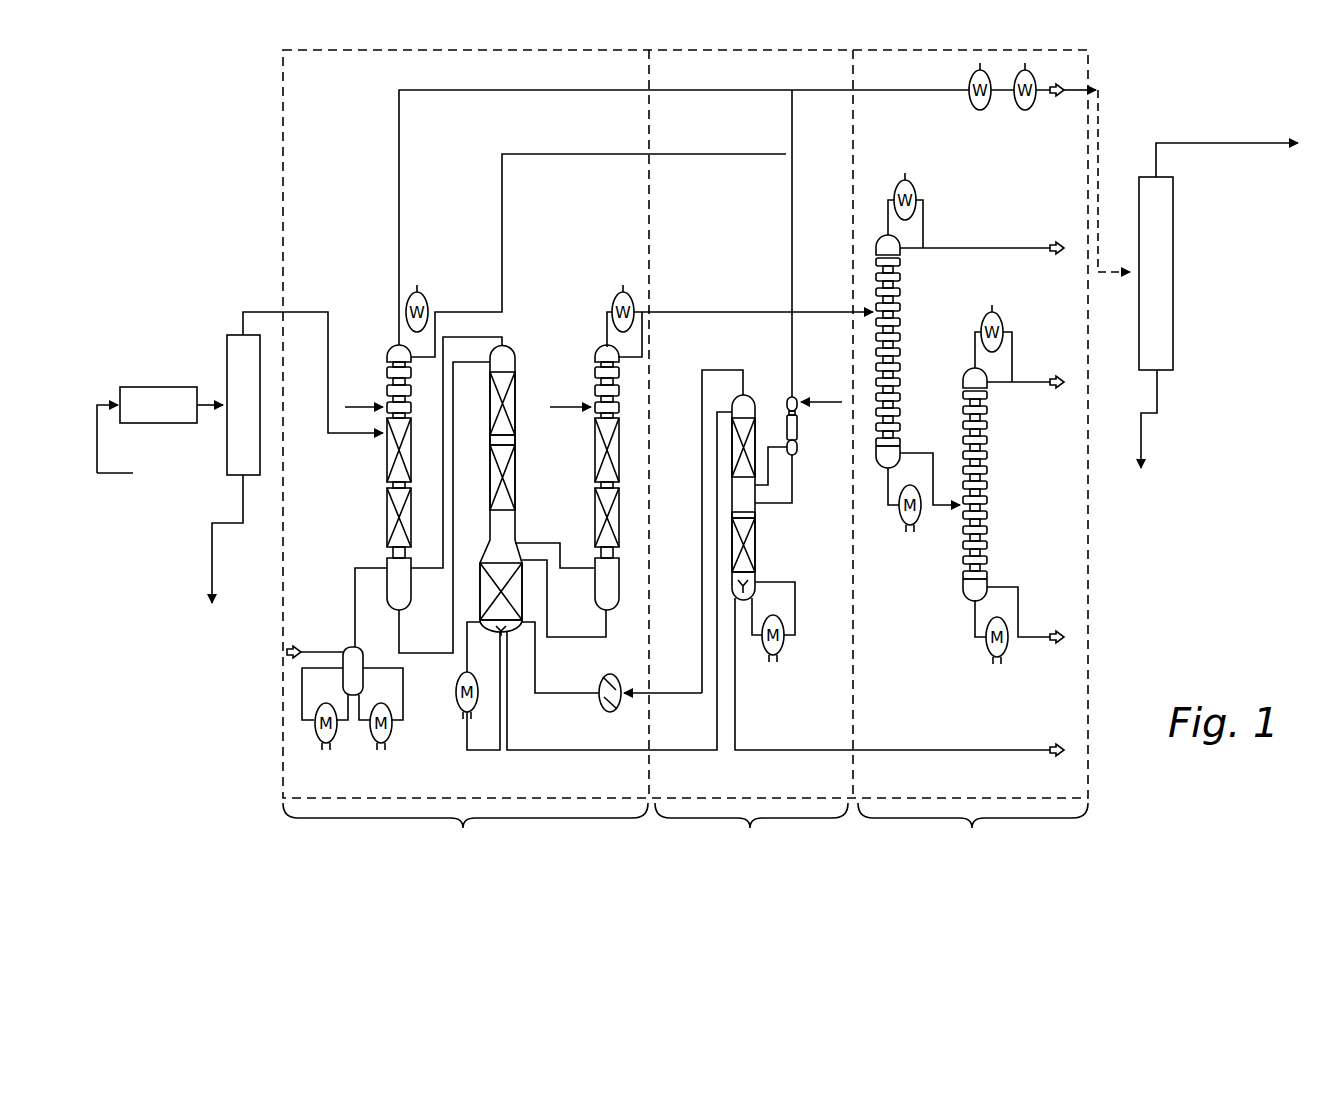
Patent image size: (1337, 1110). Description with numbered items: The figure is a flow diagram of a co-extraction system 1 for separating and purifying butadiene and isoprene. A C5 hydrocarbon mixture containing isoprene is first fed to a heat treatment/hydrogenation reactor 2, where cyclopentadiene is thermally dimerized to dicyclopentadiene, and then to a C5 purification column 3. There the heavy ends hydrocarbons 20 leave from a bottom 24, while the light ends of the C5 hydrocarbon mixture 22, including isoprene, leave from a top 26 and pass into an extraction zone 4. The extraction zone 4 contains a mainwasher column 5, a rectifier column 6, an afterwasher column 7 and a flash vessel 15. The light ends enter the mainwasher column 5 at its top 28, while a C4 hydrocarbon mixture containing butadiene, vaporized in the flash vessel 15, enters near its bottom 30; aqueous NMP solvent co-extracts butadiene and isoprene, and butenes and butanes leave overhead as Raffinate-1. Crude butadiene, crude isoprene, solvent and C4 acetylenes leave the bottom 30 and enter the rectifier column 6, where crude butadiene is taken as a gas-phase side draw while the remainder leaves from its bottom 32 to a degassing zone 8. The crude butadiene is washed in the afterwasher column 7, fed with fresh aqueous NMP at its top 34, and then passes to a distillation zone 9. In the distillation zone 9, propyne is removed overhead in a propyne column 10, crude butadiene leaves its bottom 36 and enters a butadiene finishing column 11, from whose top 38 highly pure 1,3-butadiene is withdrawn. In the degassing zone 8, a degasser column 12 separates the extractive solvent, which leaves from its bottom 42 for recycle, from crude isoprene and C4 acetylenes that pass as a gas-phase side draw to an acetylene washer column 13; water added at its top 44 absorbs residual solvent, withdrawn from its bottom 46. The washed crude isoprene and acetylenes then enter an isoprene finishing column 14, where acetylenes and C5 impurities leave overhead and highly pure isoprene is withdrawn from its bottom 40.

The co-extraction system 1 is at (203, 772).
The heat treatment/hydrogenation reactor 2 is at (148, 385).
The C5 purification column 3 is at (227, 378).
The extraction zone 4 is at (466, 457).
The mainwasher column 5 is at (387, 455).
The rectifier column 6 is at (514, 467).
The afterwasher column 7 is at (596, 512).
The degassing zone 8 is at (754, 457).
The distillation zone 9 is at (973, 834).
The propyne column 10 is at (900, 375).
The butadiene finishing column 11 is at (990, 485).
The degasser column 12 is at (757, 525).
The acetylene washer column 13 is at (798, 425).
The isoprene finishing column 14 is at (1175, 290).
The flash vessel 15 is at (363, 680).
The heavy ends (C5+) hydrocarbons 20 is at (215, 678).
The light ends of the C5 hydrocarbon mixture 22 is at (230, 242).
The bottom of the C5 purification column 24 is at (240, 478).
The top of the C5 purification column 26 is at (243, 330).
The top of the mainwasher column 28 is at (393, 348).
The bottom of the mainwasher column 30 is at (403, 605).
The bottom of the rectifier column 32 is at (512, 632).
The top of the afterwasher column 34 is at (600, 348).
The bottom of the propyne column 36 is at (905, 470).
The top of the butadiene finishing column 38 is at (877, 242).
The bottom of the isoprene finishing column 40 is at (1163, 375).
The bottom of the degasser column 42 is at (752, 595).
The top of the acetylene washer column 44 is at (788, 398).
The bottom of the acetylene washer column 46 is at (798, 455).